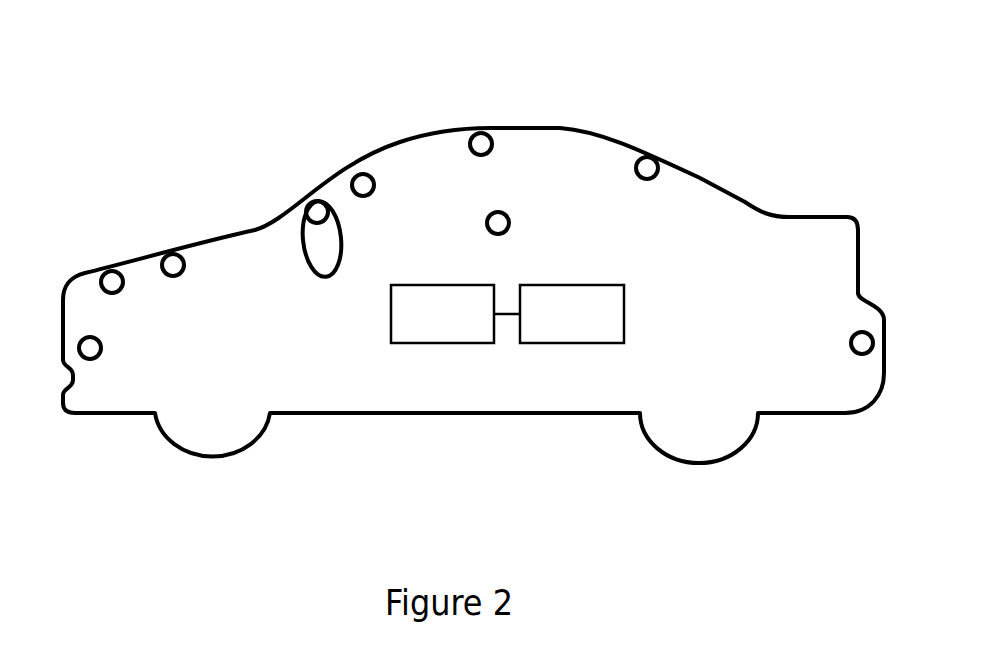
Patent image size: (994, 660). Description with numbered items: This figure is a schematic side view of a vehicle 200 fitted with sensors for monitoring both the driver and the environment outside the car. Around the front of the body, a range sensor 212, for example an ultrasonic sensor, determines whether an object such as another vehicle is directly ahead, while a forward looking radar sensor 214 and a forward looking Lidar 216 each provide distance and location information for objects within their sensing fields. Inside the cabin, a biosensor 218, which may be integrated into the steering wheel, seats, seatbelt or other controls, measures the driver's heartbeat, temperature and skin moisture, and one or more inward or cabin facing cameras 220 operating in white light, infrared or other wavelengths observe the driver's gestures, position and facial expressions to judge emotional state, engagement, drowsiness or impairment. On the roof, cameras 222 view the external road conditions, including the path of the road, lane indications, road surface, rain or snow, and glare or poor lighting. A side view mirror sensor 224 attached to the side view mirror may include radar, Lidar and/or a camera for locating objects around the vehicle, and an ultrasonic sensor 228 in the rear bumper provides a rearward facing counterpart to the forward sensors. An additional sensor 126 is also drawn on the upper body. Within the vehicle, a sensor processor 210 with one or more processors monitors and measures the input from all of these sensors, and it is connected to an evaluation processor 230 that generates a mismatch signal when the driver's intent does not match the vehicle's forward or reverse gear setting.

The vehicle 200 is at (172, 88).
The range sensor 212 is at (88, 335).
The radar sensor 214 is at (112, 269).
The Lidar 216 is at (173, 252).
The biosensor 218 is at (317, 199).
The cabin facing camera 220 is at (363, 172).
The camera 222 is at (482, 131).
The side view mirror sensor 224 is at (498, 210).
The sensor 126 is at (647, 155).
The ultrasonic sensor 228 is at (862, 330).
The sensor processor 210 is at (442, 314).
The evaluation processor 230 is at (572, 314).